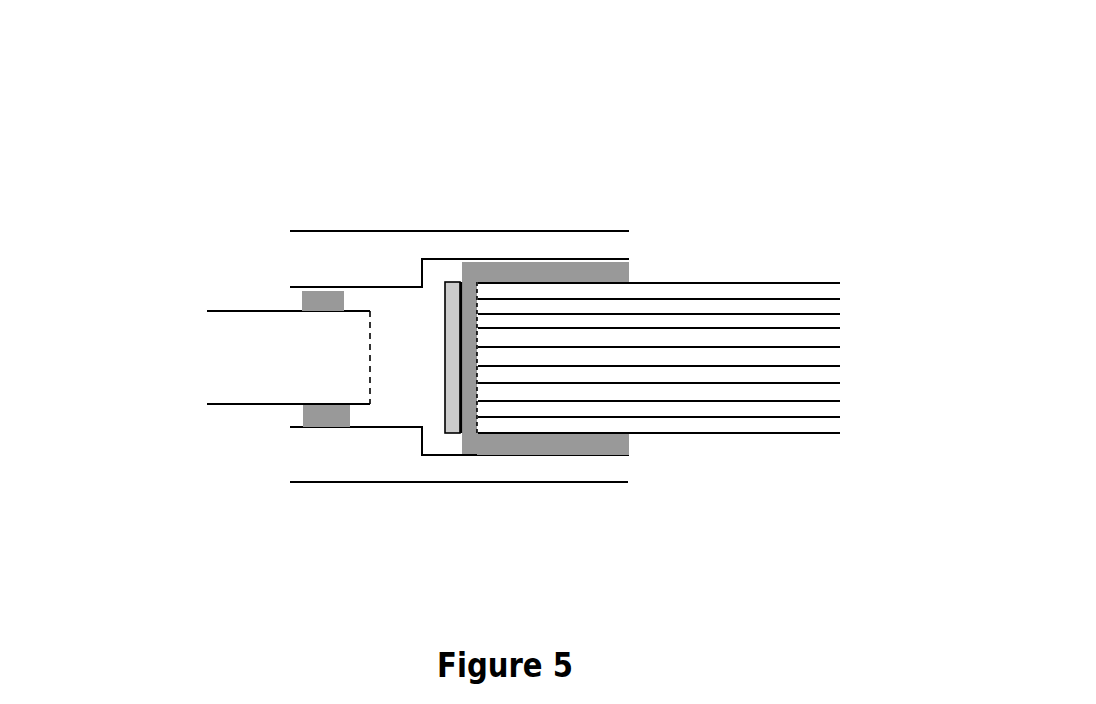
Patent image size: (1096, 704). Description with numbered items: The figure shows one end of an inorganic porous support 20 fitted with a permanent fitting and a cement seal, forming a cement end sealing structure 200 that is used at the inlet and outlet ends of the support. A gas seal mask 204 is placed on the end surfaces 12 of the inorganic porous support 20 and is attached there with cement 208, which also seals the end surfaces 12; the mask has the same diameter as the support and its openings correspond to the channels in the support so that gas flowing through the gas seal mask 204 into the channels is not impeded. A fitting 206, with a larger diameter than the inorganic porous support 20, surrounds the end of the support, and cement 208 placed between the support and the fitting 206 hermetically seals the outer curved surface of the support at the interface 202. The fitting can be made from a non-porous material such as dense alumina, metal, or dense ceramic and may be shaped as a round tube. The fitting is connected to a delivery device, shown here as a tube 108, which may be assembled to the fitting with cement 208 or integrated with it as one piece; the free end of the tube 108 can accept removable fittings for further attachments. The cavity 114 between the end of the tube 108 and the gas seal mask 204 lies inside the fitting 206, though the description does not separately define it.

The cement end sealing structure 200 is at (166, 86).
The tube 108 is at (240, 309).
The cavity 114 is at (420, 350).
The fitting 206 is at (472, 254).
The cement 208 is at (327, 418).
The interface 202 is at (557, 438).
The gas seal mask 204 is at (452, 431).
The end surfaces 12 is at (481, 337).
The inorganic porous support 20 is at (706, 281).